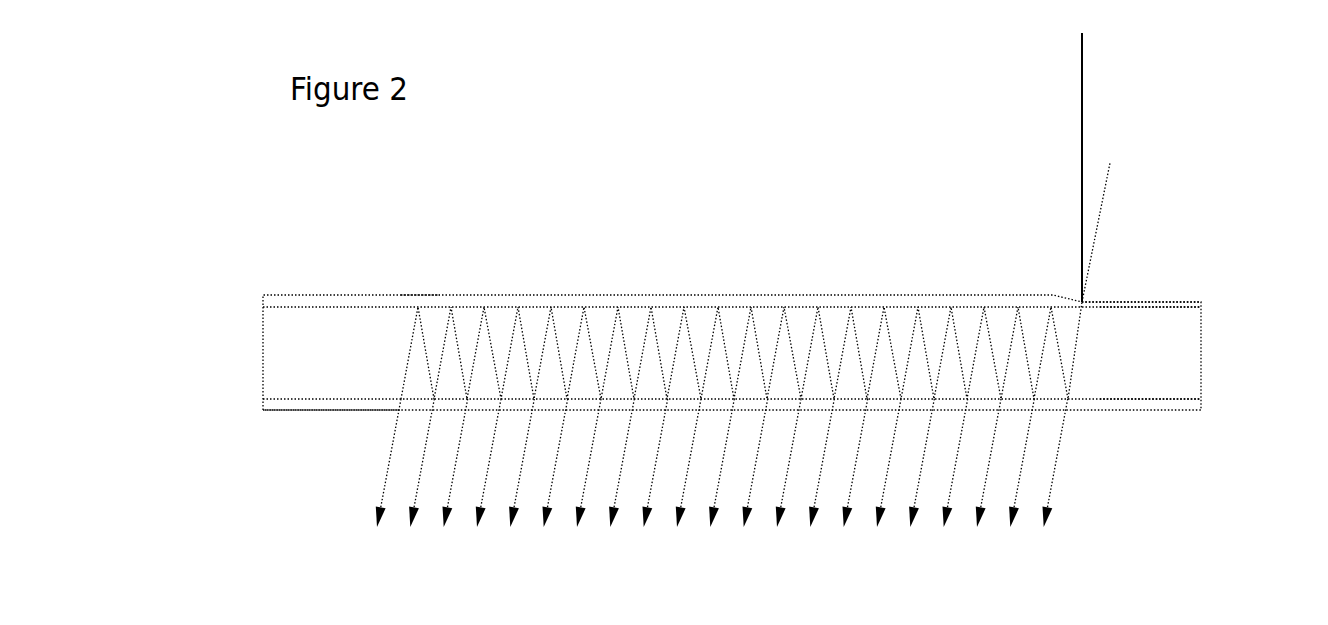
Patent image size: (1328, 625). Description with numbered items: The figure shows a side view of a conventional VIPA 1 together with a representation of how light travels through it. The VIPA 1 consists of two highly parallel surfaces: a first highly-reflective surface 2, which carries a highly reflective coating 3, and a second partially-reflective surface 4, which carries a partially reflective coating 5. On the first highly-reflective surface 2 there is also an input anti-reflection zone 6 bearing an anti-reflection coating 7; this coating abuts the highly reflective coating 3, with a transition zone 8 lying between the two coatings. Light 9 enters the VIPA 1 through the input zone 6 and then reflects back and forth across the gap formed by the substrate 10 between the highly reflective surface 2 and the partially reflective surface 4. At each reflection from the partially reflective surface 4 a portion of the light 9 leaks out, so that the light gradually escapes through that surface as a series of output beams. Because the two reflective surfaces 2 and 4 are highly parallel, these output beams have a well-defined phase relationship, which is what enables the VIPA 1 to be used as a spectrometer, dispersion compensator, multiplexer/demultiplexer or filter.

The VIPA 1 is at (674, 230).
The first highly-reflective surface 2 is at (372, 308).
The highly reflective coating 3 is at (413, 296).
The second partially-reflective surface 4 is at (1137, 395).
The partially reflective coating 5 is at (345, 403).
The input anti-reflection zone 6 is at (1137, 307).
The anti-reflection coating 7 is at (1173, 298).
The transition zone 8 is at (1065, 297).
The light 9 is at (1110, 226).
The substrate 10 is at (373, 383).